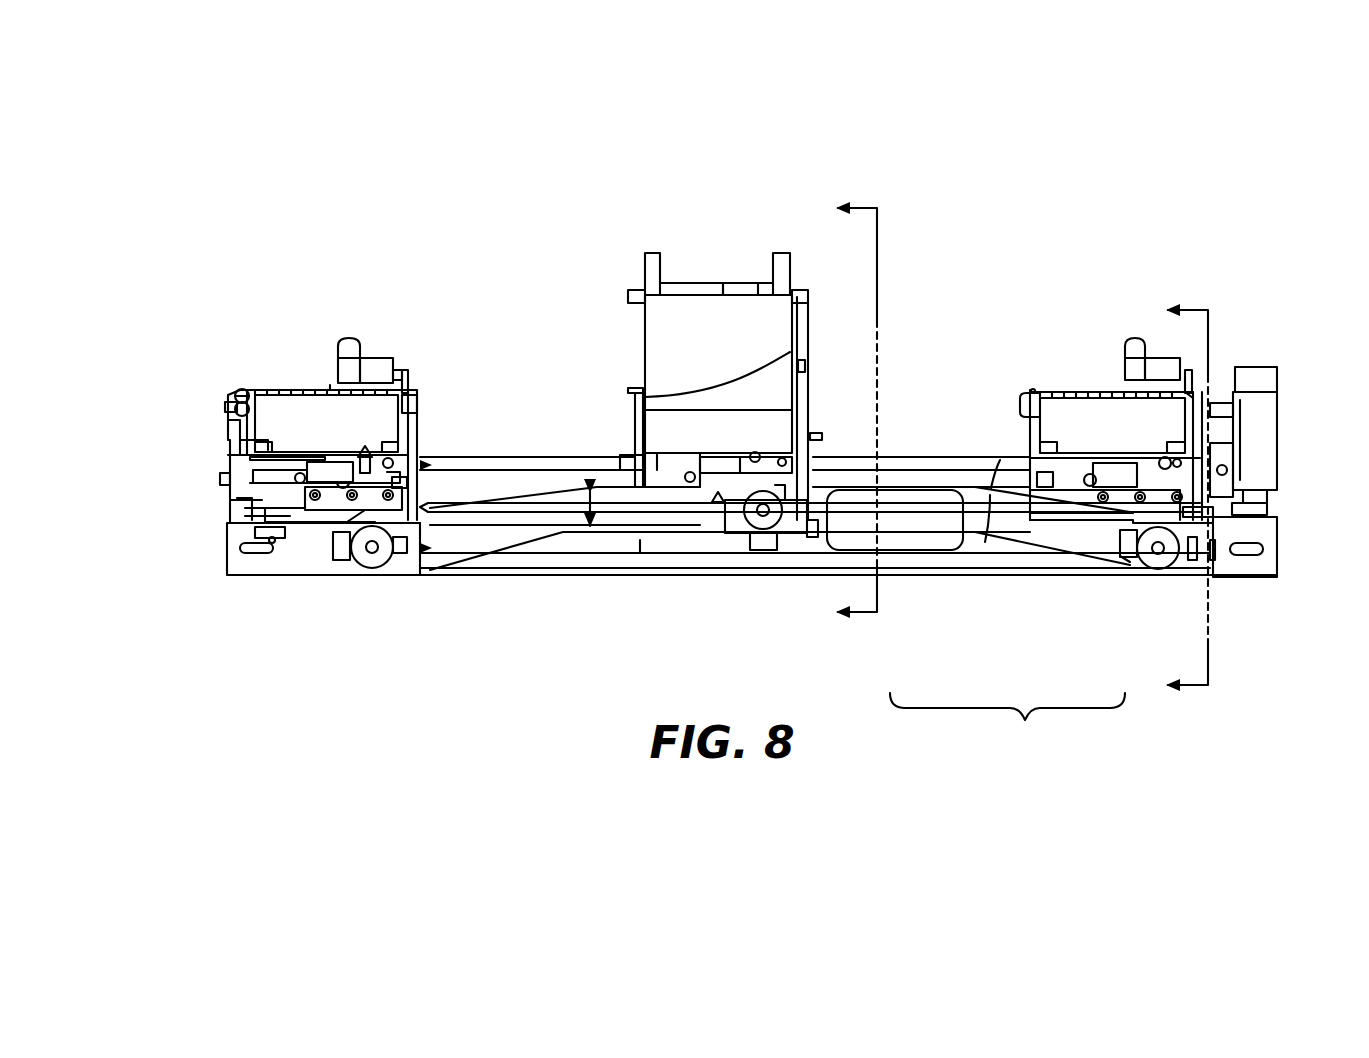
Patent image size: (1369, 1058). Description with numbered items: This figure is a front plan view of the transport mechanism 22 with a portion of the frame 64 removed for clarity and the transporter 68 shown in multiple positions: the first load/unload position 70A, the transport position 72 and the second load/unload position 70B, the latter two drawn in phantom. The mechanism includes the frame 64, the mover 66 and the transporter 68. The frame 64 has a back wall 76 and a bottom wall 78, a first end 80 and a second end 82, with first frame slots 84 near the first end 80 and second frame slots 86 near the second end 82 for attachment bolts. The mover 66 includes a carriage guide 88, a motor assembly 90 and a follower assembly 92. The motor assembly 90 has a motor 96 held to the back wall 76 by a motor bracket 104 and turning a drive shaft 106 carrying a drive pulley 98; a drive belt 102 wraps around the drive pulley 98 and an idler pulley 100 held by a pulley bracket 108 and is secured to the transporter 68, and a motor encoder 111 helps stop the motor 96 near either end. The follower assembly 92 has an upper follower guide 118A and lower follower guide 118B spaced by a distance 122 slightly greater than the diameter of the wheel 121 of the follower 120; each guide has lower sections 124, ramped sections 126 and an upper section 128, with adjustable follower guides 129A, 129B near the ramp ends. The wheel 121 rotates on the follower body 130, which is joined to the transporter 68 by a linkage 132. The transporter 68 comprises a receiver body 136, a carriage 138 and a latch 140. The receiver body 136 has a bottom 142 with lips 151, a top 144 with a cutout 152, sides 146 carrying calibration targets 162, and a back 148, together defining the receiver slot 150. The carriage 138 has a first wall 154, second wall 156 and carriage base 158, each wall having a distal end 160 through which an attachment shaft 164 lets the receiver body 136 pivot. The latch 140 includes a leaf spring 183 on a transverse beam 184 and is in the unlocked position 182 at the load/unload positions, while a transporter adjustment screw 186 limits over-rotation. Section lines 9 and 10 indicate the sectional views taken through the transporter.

The transport mechanism 22 is at (1030, 215).
The frame 64 is at (515, 452).
The mover 66 is at (1265, 368).
The transporter 68 is at (262, 388).
The first load/unload position 70A is at (1090, 370).
The second load/unload position 70B is at (300, 370).
The transport position 72 is at (712, 260).
The back wall 76 is at (905, 503).
The bottom wall 78 is at (895, 555).
The first end 80 is at (1262, 553).
The second end 82 is at (232, 547).
The first frame slots 84 is at (1262, 577).
The second frame slots 86 is at (255, 556).
The carriage guide 88 is at (465, 470).
The motor assembly 90 is at (1282, 400).
The follower assembly 92 is at (1007, 728).
The motor 96 is at (1265, 430).
The drive pulley 98 is at (1255, 520).
The idler pulley 100 is at (305, 500).
The drive belt 102 is at (530, 540).
The motor bracket 104 is at (1270, 490).
The drive shaft 106 is at (1268, 507).
The pulley bracket 108 is at (262, 520).
The motor encoder 111 is at (1272, 378).
The upper follower guide 118A is at (991, 492).
The lower follower guide 118B is at (985, 545).
The follower 120 is at (1130, 560).
The wheel 121 is at (1162, 575).
The distance 122 is at (590, 535).
The lower sections 124 is at (425, 565).
The ramped sections 126 is at (470, 556).
The upper section 128 is at (642, 545).
The adjustable follower guide 129A is at (1220, 577).
The adjustable follower guide 129B is at (335, 548).
The follower body 130 is at (760, 540).
The linkage 132 is at (812, 420).
The receiver body 136 is at (1095, 394).
The carriage 138 is at (630, 453).
The latch 140 is at (380, 356).
The bottom 142 is at (768, 325).
The top 144 is at (330, 386).
The sides 146 is at (800, 305).
The back 148 is at (757, 455).
The receiver slot 150 is at (720, 421).
The lips 151 is at (262, 443).
The cutout 152 is at (728, 290).
The first wall 154 is at (808, 410).
The second wall 156 is at (632, 405).
The carriage base 158 is at (645, 462).
The distal end 160 is at (640, 390).
The calibration targets 162 is at (233, 403).
The attachment shaft 164 is at (700, 383).
The unlocked position 182 is at (405, 368).
The leaf spring 183 is at (350, 338).
The transverse beam 184 is at (378, 373).
The transporter adjustment screw 186 is at (720, 505).
The section line 9 is at (1174, 500).
The section line 10 is at (834, 411).